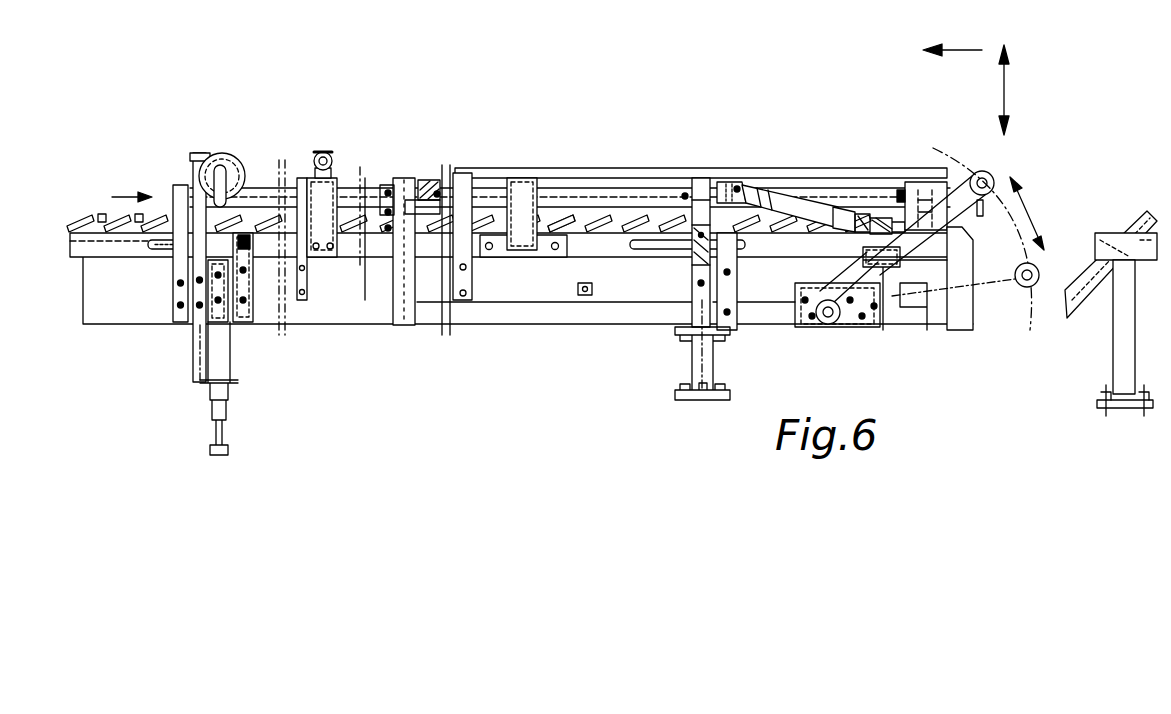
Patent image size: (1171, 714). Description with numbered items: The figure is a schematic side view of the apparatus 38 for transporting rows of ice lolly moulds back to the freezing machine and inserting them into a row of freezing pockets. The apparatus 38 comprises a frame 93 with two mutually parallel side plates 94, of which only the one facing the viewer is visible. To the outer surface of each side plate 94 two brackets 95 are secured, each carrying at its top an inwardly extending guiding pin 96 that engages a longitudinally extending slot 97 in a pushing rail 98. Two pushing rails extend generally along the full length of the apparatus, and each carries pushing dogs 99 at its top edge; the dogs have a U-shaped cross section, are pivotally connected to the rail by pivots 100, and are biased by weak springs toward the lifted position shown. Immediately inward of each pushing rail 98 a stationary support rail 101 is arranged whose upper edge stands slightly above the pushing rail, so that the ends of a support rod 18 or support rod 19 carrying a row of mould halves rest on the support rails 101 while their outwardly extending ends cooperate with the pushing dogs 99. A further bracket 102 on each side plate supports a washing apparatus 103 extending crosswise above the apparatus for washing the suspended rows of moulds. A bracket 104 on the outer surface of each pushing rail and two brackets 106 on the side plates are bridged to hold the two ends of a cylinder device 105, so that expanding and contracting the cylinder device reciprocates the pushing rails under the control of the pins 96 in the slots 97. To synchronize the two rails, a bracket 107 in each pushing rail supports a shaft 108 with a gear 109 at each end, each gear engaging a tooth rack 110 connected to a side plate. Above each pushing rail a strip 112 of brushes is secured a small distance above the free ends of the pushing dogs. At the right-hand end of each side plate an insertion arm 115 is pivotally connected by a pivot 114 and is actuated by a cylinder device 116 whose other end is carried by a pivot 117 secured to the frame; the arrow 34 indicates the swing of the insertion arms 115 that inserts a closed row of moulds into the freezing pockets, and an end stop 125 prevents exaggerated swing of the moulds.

The support rod 18 is at (108, 272).
The support rod 19 is at (143, 233).
The arrow 34 is at (1027, 208).
The apparatus for transporting and inserting moulds 38 is at (694, 170).
The frame 93 is at (110, 328).
The side plate 94 is at (460, 327).
The bracket 95 is at (253, 300).
The guiding pin 96 is at (262, 243).
The slot 97 is at (168, 258).
The pushing rail 98 is at (588, 248).
The pushing dog 99 is at (90, 222).
The pivot 100 is at (163, 243).
The support rail 101 is at (555, 213).
The bracket 102 is at (197, 265).
The washing apparatus 103 is at (232, 160).
The bracket 104 is at (543, 156).
The cylinder device 105 is at (420, 182).
The bracket 106 is at (402, 298).
The bracket 107 is at (320, 208).
The shaft 108 is at (330, 158).
The gear 109 is at (316, 163).
The tooth rack 110 is at (392, 190).
The strip of brushes 112 is at (622, 210).
The pivot 114 is at (830, 323).
The insertion arm 115 is at (935, 180).
The cylinder device 116 is at (780, 200).
The pivot 117 is at (765, 150).
The end stop 125 is at (1125, 330).